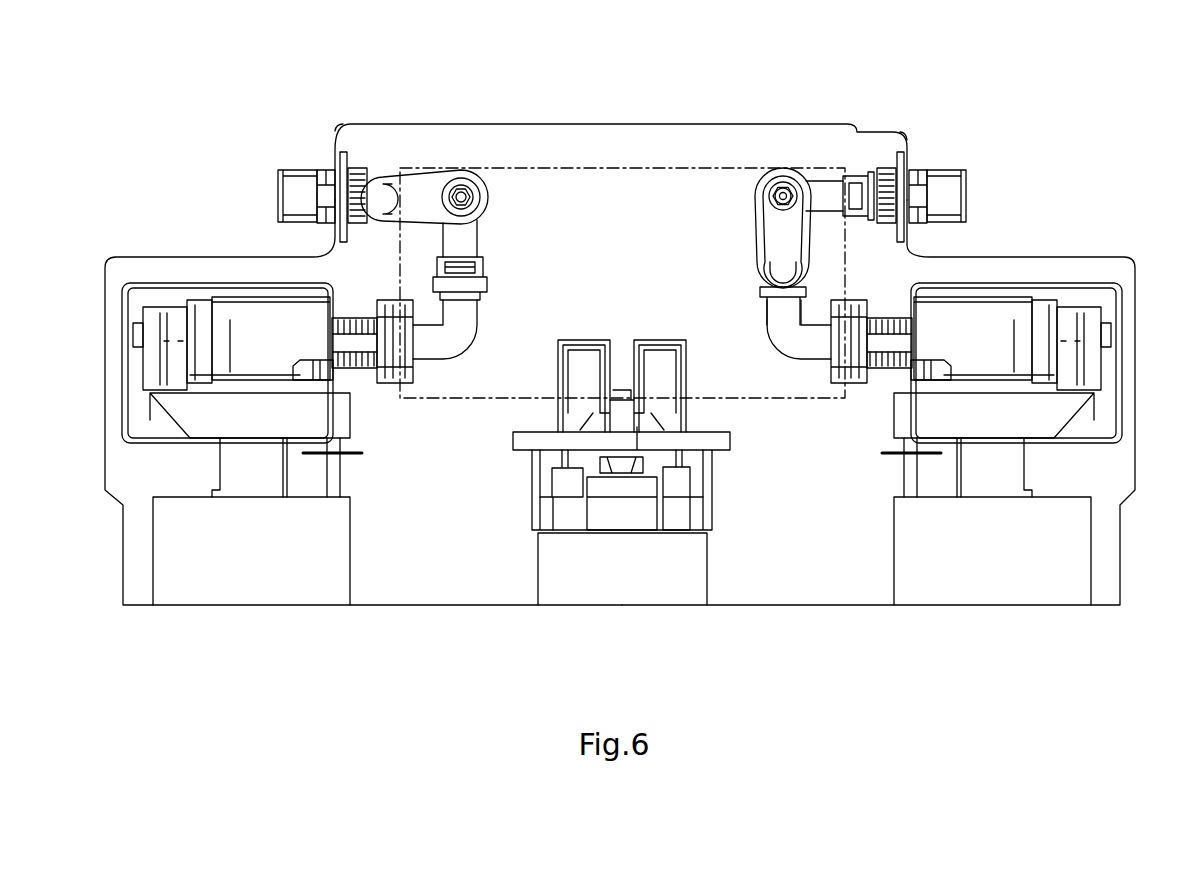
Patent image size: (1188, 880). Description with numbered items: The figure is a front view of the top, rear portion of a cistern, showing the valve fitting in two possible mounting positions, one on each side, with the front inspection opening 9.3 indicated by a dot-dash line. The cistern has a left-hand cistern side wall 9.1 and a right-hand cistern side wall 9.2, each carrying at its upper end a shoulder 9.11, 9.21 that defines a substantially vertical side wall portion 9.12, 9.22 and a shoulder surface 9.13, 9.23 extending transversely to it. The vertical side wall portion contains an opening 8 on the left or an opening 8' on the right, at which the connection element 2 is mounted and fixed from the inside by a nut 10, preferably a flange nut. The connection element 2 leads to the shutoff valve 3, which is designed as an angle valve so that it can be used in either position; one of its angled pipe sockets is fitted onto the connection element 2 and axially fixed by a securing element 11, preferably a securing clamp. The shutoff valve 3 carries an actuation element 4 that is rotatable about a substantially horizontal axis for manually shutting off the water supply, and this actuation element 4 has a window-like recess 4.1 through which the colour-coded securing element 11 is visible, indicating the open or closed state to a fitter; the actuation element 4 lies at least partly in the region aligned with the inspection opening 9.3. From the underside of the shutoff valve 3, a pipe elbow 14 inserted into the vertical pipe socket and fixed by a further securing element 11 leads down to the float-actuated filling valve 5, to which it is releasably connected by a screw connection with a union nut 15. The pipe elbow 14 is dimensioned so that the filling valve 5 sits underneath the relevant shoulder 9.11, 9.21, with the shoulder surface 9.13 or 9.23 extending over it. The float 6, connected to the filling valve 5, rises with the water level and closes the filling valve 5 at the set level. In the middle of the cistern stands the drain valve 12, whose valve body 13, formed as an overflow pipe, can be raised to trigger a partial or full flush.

The connection element 2 is at (300, 187).
The shutoff valve 3 is at (463, 237).
The actuation element 4 is at (422, 190).
The window-like recess 4.1 is at (377, 185).
The float-actuated filling valve 5 is at (182, 313).
The float 6 is at (192, 577).
The opening 8 is at (327, 158).
The opening 8' is at (920, 158).
The left-hand cistern side wall 9.1 is at (330, 248).
The right-hand cistern side wall 9.2 is at (930, 256).
The inspection opening 9.3 is at (688, 188).
The shoulder 9.11 is at (218, 253).
The vertical side wall portion 9.12 is at (342, 133).
The shoulder surface 9.13 is at (180, 253).
The shoulder 9.21 is at (1028, 253).
The vertical side wall portion 9.22 is at (905, 133).
The shoulder surface 9.23 is at (1065, 253).
The nut 10 is at (355, 224).
The securing element 11 is at (472, 283).
The drain valve 12 is at (613, 573).
The valve body 13 is at (610, 510).
The pipe elbow 14 is at (455, 340).
The union nut 15 is at (393, 347).